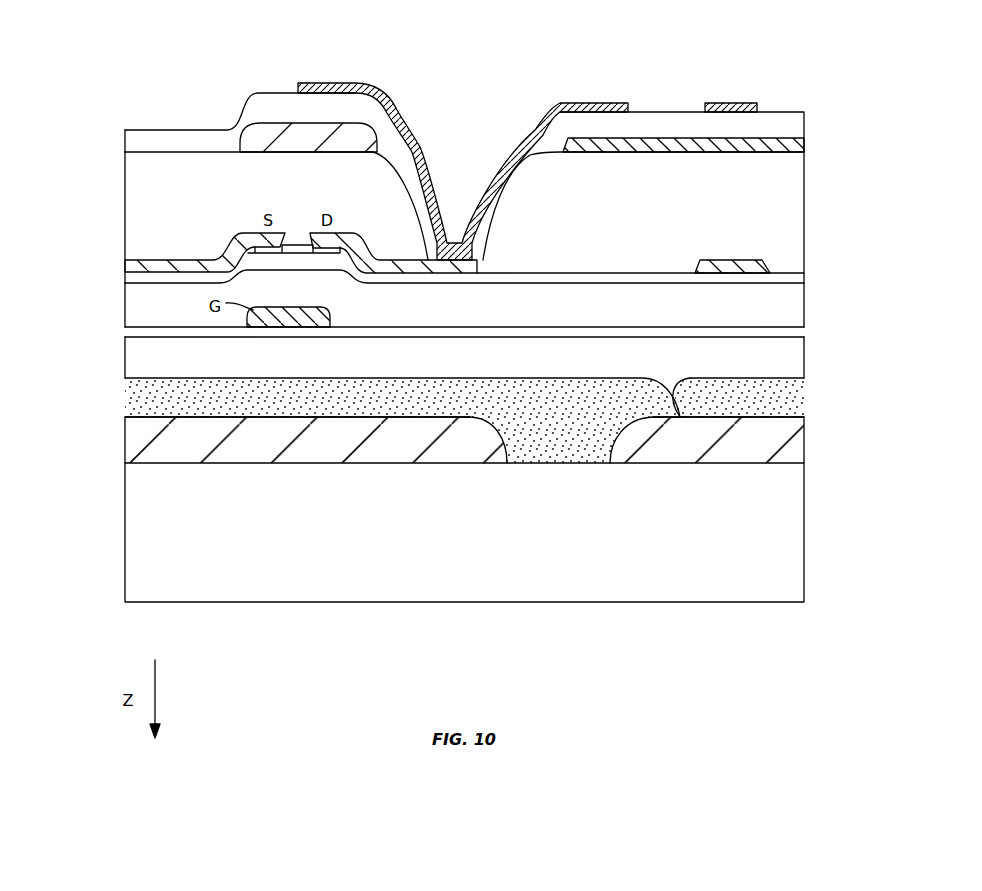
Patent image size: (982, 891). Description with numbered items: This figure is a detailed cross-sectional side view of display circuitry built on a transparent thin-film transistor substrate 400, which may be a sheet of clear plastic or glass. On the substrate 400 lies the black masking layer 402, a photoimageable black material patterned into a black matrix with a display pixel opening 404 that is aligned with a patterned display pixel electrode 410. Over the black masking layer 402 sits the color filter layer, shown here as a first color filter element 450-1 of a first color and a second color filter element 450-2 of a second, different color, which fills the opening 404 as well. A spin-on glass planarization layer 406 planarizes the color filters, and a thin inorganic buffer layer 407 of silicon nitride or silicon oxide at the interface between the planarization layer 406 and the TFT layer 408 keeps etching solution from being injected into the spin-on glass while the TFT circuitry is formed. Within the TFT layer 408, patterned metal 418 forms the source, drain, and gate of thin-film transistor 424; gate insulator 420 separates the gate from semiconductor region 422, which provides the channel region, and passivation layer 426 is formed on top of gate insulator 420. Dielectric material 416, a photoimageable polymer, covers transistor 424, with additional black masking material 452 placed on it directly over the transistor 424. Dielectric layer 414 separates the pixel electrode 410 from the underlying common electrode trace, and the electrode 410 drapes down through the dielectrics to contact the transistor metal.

The substrate 400 is at (805, 530).
The black masking layer 402 is at (133, 438).
The opening 404 is at (608, 468).
The planarization layer 406 is at (133, 352).
The inorganic buffer layer 407 is at (805, 333).
The TFT layer 408 is at (125, 327).
The display pixel electrodes 410 is at (338, 83).
The dielectric layer 414 is at (156, 130).
The dielectric material 416 is at (122, 155).
The patterned metal 418 is at (183, 259).
The gate insulator 420 is at (120, 287).
The semiconductor region 422 is at (283, 267).
The thin-film transistor 424 is at (302, 199).
The passivation layer 426 is at (621, 270).
The first color filter element 450-1 is at (133, 392).
The second color filter element 450-2 is at (805, 398).
The additional black masking material 452 is at (273, 130).